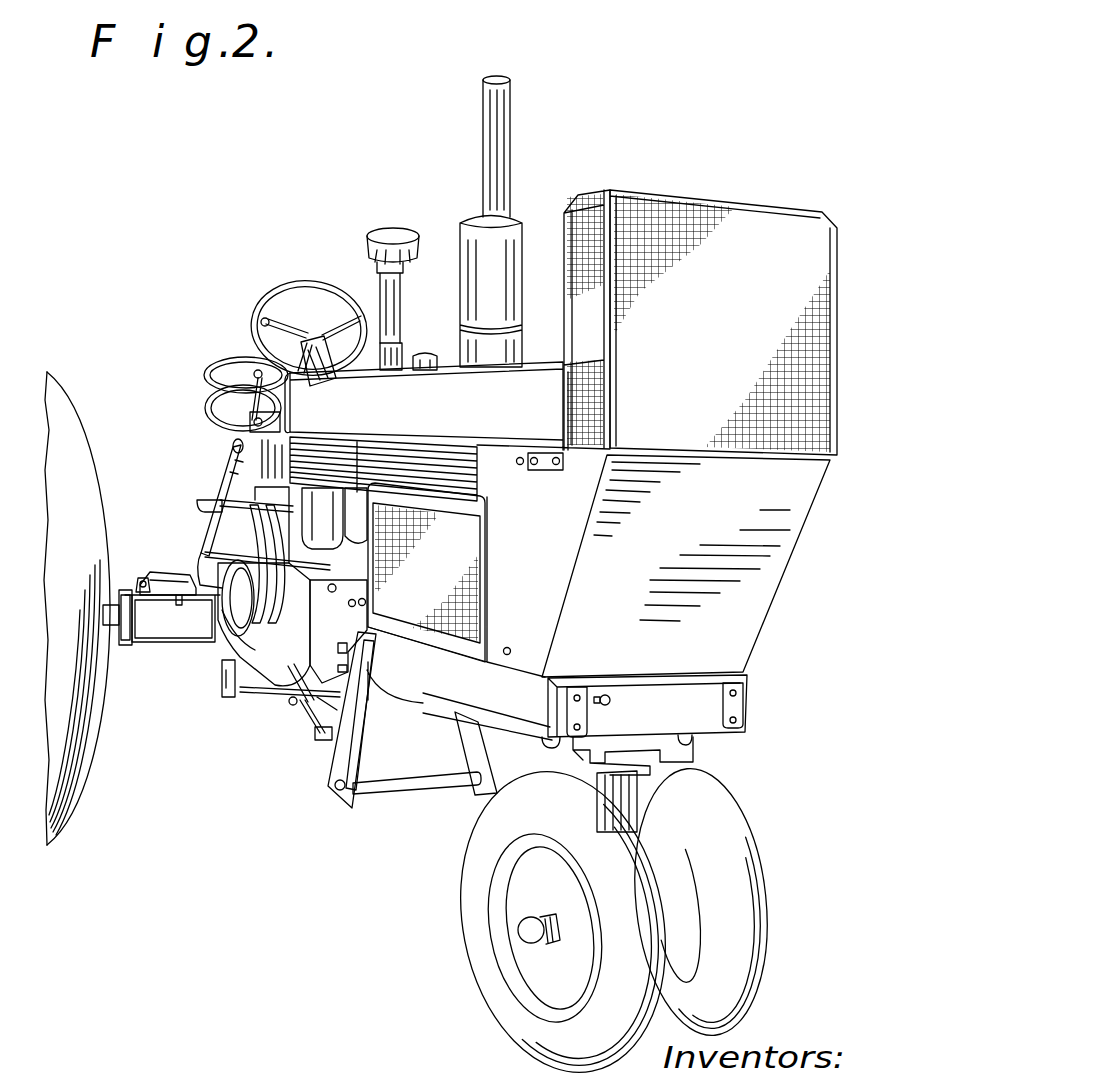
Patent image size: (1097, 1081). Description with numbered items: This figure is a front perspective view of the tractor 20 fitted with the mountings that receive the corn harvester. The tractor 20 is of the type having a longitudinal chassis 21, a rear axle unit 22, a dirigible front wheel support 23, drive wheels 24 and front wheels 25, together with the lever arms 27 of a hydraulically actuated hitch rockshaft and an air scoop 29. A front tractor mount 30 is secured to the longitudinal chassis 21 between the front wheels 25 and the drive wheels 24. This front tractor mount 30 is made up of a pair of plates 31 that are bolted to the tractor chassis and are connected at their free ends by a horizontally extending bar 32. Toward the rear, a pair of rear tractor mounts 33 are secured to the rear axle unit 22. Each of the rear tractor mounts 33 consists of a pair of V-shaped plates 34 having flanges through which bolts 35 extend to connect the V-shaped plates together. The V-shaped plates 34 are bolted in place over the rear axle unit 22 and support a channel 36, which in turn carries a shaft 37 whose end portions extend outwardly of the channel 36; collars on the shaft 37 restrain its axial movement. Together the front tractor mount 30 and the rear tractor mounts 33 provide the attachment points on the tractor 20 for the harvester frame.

The tractor 20 is at (737, 141).
The longitudinal chassis 21 is at (456, 684).
The rear axle unit 22 is at (220, 642).
The dirigible front wheel support 23 is at (640, 792).
The drive wheels 24 is at (80, 775).
The front wheels 25 is at (638, 982).
The lever arms 27 is at (193, 507).
The air scoop 29 is at (780, 560).
The front tractor mount 30 is at (323, 766).
The plates 31 is at (352, 757).
The horizontally extending bar 32 is at (407, 788).
The rear tractor mounts 33 is at (157, 649).
The V-shaped plates 34 is at (135, 590).
The bolts 35 is at (179, 605).
The channel 36 is at (176, 566).
The shaft 37 is at (143, 580).